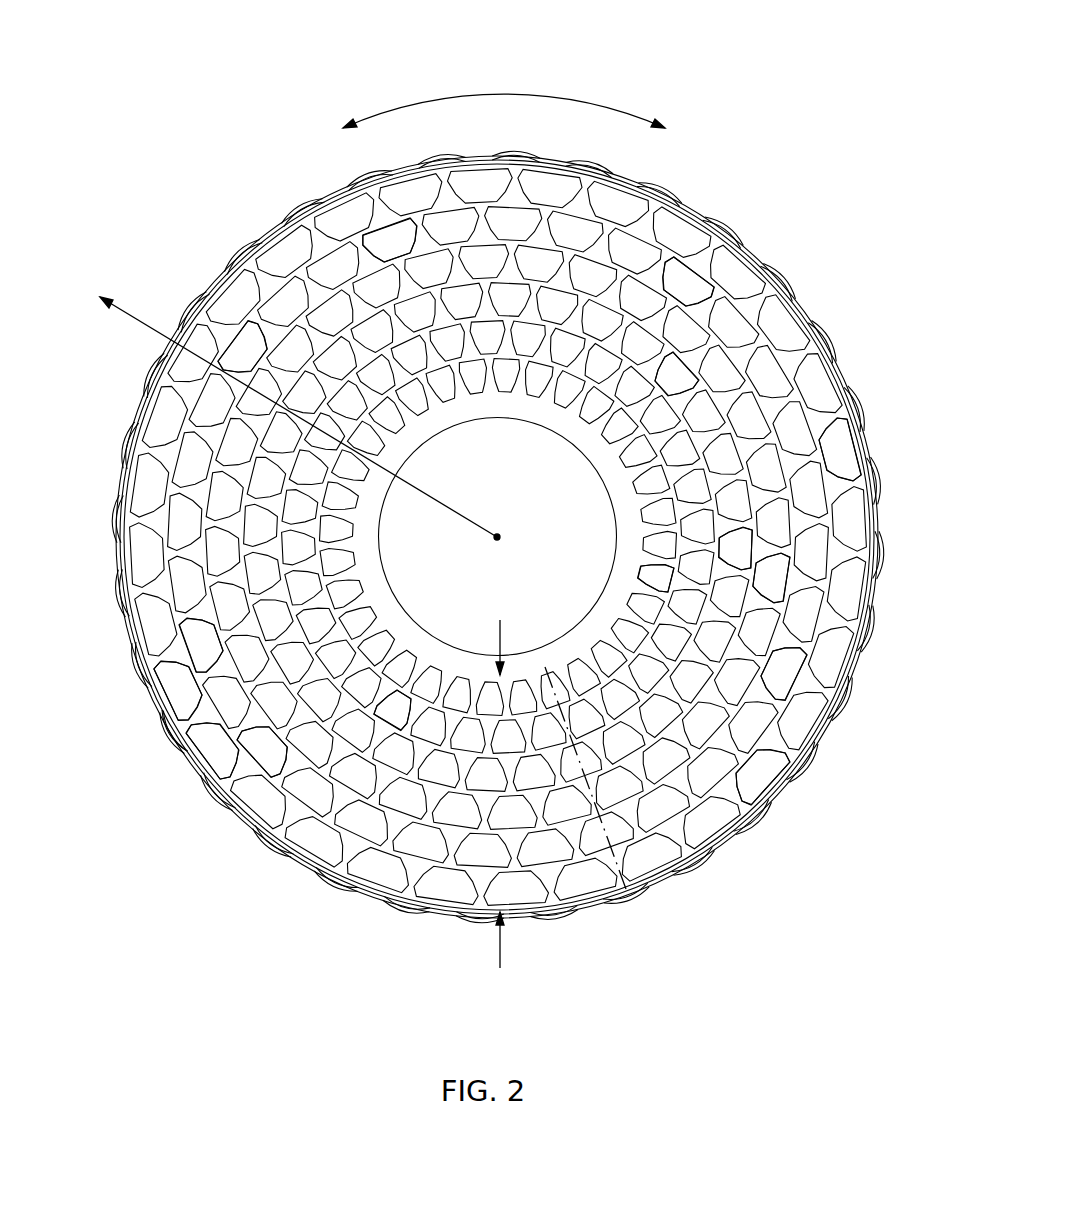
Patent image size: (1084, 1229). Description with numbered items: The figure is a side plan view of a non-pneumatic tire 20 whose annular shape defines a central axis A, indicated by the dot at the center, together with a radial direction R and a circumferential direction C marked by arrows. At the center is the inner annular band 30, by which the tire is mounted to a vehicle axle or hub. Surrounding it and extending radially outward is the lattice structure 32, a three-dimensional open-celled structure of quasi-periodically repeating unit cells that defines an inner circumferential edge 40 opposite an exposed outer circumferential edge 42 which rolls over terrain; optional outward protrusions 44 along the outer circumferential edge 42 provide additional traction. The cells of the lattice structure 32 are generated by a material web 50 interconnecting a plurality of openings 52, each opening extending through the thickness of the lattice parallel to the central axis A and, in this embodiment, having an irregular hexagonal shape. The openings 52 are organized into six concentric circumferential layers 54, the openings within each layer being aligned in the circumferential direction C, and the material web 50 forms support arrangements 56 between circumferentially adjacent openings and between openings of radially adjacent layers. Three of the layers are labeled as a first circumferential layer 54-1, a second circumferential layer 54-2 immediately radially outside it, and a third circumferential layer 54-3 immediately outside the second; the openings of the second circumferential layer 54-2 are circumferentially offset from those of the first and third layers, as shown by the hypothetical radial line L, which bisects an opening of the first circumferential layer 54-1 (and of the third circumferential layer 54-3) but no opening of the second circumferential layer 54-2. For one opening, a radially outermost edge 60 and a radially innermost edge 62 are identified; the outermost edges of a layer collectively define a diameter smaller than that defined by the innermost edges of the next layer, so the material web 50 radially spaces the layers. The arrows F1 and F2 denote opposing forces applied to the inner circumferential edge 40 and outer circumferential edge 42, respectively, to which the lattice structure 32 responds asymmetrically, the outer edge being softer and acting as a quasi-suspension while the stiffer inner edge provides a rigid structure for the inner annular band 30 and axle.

The non-pneumatic tire 20 is at (246, 68).
The inner annular band 30 is at (375, 578).
The lattice structure 32 is at (759, 773).
The inner circumferential edge 40 is at (638, 585).
The outer circumferential edge 42 is at (860, 444).
The outward protrusions 44 is at (168, 738).
The material web 50 is at (267, 330).
The openings 52 is at (672, 378).
The circumferential layers 54 is at (410, 712).
The first circumferential layer 54-1 is at (735, 571).
The second circumferential layer 54-2 is at (763, 602).
The third circumferential layer 54-3 is at (791, 643).
The support arrangement 56 is at (363, 255).
The radially outermost edge 60 is at (187, 655).
The radially innermost edge 62 is at (212, 633).
The central axis A is at (505, 532).
The radial direction R is at (137, 320).
The circumferential direction C is at (533, 93).
The hypothetical line L is at (612, 852).
The force applied to inner circumferential edge F1 is at (500, 643).
The force applied to outer circumferential edge F2 is at (503, 948).